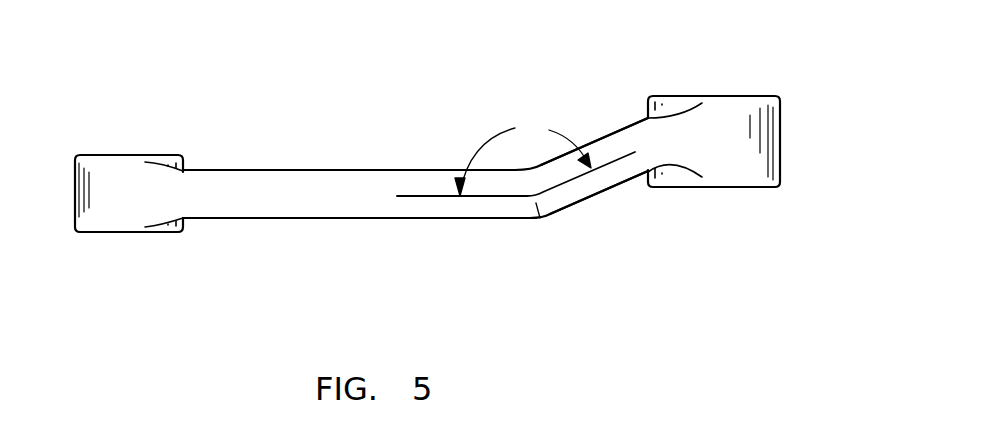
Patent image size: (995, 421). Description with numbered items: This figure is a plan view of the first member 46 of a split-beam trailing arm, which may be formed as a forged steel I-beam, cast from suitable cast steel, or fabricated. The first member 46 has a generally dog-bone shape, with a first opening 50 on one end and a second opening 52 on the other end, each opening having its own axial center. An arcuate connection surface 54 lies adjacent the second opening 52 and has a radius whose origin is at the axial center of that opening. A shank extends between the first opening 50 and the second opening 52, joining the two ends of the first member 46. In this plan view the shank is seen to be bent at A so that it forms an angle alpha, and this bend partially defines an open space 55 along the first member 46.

The first member 46 is at (290, 170).
The first opening 50 is at (147, 257).
The second opening 52 is at (715, 208).
The arcuate connection surface 54 is at (779, 136).
The open space 55 is at (462, 139).
The bend point A is at (535, 203).